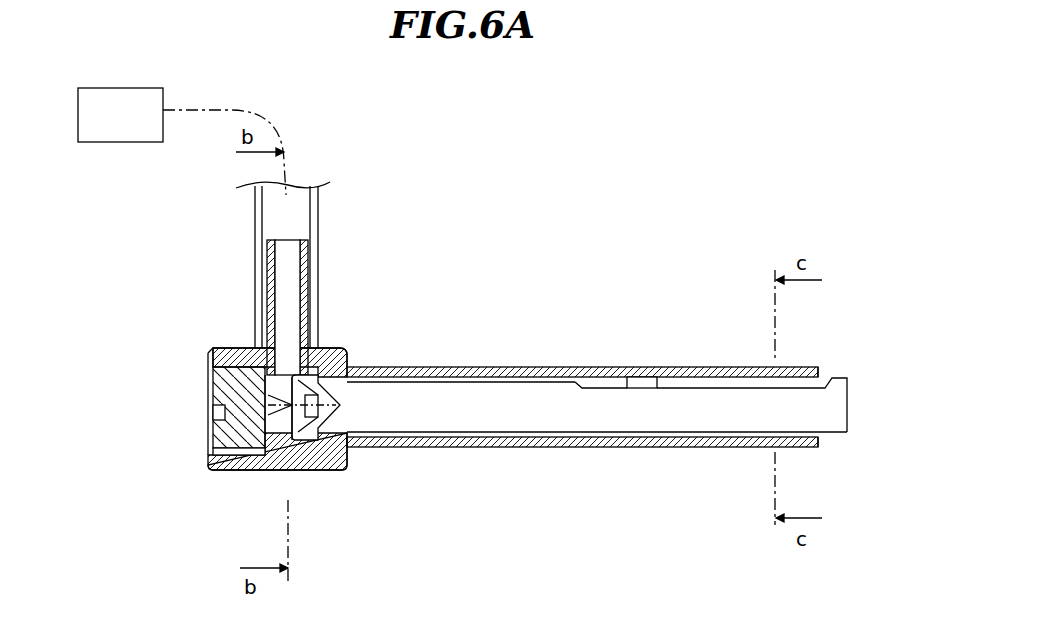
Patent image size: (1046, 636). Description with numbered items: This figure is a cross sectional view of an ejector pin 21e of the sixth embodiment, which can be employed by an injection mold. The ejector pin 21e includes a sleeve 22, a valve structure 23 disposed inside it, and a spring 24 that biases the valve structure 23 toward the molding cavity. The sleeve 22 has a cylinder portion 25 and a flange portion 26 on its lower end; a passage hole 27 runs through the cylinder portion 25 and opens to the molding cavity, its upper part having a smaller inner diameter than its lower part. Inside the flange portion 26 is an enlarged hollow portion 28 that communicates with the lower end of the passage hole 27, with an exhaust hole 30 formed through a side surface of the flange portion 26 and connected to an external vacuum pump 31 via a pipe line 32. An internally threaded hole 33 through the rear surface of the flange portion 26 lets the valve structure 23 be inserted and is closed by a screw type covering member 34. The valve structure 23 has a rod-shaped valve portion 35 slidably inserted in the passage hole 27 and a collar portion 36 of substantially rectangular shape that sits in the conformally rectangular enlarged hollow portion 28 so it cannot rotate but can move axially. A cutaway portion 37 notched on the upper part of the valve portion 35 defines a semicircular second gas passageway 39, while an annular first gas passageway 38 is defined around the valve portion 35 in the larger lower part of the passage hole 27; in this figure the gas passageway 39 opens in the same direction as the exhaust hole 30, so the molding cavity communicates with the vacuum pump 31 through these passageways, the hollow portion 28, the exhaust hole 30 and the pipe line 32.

The ejector pin 21e is at (683, 152).
The sleeve 22 is at (303, 283).
The valve structure 23 is at (597, 400).
The spring 24 is at (218, 414).
The cylinder portion 25 is at (437, 367).
The flange portion 26 is at (327, 348).
The passage hole 27 is at (575, 388).
The enlarged hollow portion 28 is at (283, 437).
The exhaust hole 30 is at (287, 323).
The external vacuum pump 31 is at (143, 88).
The pipe line 32 is at (222, 110).
The internally threaded hole 33 is at (215, 470).
The screw type covering member 34 is at (212, 388).
The rod-shaped valve portion 35 is at (597, 376).
The collar portion 36 is at (415, 447).
The cutaway portion 37 is at (636, 388).
The first gas passageway 38 is at (508, 382).
The second gas passageway 39 is at (742, 388).